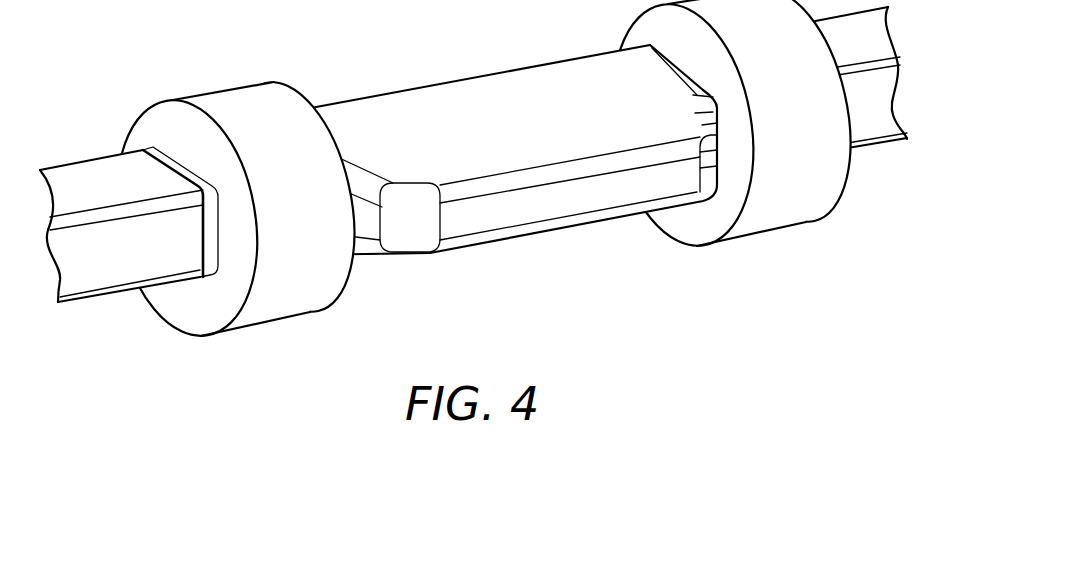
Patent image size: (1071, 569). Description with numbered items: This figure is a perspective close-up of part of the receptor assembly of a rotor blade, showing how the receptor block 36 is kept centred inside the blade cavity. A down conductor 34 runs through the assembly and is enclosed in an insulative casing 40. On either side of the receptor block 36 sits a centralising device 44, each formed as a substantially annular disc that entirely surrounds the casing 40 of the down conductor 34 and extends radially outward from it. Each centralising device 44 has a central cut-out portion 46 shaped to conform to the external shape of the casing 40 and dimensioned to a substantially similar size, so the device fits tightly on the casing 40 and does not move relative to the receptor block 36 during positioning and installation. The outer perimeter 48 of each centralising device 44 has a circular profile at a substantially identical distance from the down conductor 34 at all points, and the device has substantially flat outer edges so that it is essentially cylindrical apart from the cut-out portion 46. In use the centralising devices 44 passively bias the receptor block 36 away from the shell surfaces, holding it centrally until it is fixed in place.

The down conductor 34 is at (100, 287).
The receptor block 36 is at (577, 218).
The insulative casing 40 is at (74, 155).
The centralising device 44 is at (785, 220).
The central cut-out portion 46 is at (167, 157).
The outer perimeter 48 is at (208, 348).